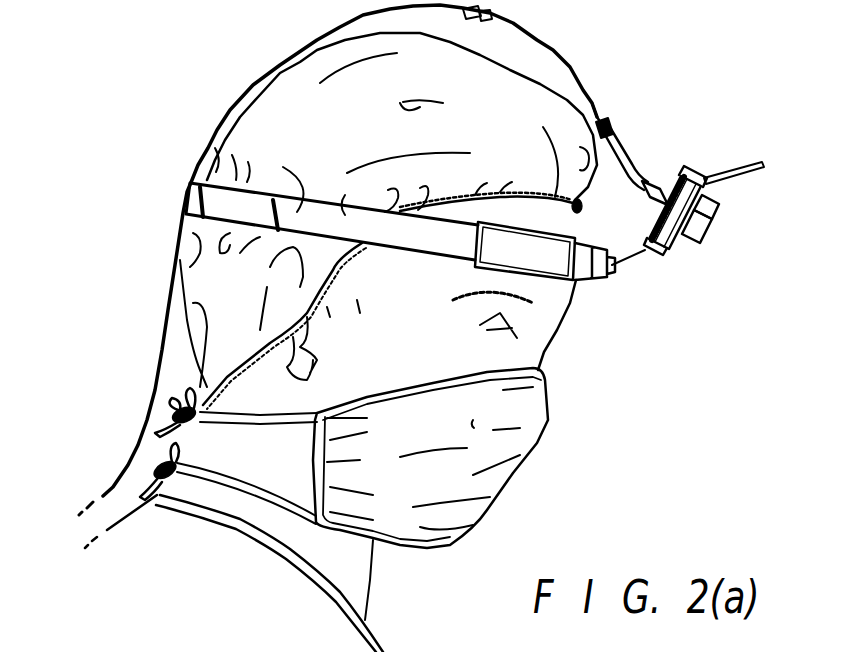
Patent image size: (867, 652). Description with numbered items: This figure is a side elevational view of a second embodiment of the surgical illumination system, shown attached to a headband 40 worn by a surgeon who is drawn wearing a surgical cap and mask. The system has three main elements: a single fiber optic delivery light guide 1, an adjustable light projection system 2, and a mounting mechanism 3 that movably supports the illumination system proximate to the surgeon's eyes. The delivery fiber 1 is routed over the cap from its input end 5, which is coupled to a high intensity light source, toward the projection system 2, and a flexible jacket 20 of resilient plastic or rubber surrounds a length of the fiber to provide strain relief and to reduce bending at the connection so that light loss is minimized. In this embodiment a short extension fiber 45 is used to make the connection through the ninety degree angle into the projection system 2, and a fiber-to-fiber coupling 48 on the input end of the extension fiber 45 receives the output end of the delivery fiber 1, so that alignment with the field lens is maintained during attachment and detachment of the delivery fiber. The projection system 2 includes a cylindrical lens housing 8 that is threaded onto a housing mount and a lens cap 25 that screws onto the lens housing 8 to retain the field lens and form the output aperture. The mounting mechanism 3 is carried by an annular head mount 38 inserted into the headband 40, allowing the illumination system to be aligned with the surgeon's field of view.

The fiber optic delivery light guide 1 is at (237, 100).
The adjustable light projection system 2 is at (712, 148).
The mounting mechanism 3 is at (606, 276).
The input end 5 is at (100, 496).
The cylindrical lens housing 8 is at (718, 210).
The flexible jacket 20 is at (610, 124).
The lens cap 25 is at (704, 238).
The annular head mount 38 is at (477, 263).
The headband 40 is at (325, 145).
The extension fiber 45 is at (623, 165).
The fiber-to-fiber coupling 48 is at (492, 13).